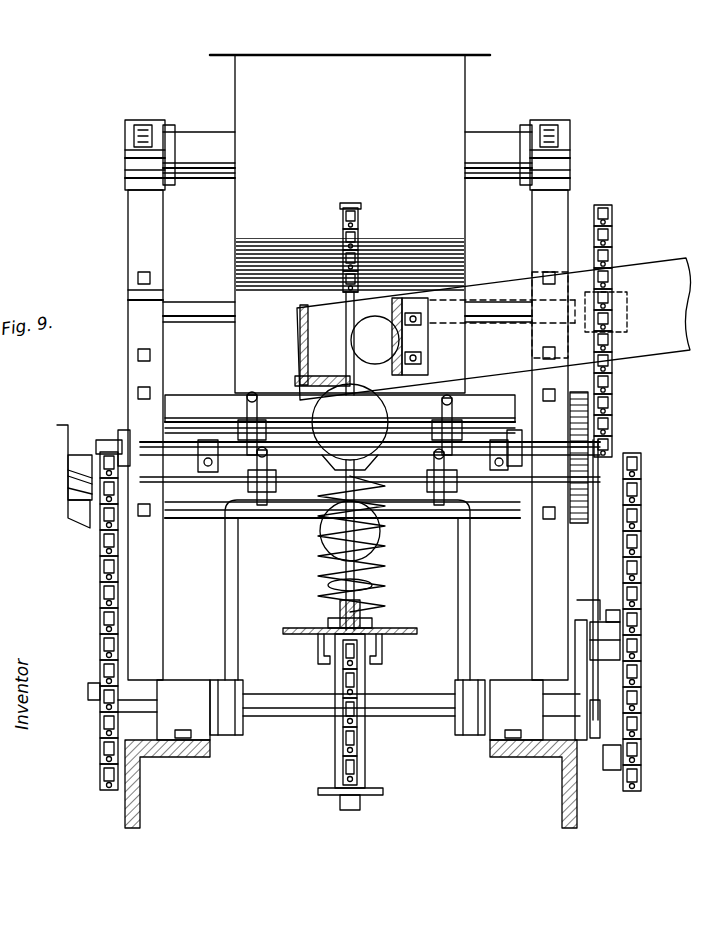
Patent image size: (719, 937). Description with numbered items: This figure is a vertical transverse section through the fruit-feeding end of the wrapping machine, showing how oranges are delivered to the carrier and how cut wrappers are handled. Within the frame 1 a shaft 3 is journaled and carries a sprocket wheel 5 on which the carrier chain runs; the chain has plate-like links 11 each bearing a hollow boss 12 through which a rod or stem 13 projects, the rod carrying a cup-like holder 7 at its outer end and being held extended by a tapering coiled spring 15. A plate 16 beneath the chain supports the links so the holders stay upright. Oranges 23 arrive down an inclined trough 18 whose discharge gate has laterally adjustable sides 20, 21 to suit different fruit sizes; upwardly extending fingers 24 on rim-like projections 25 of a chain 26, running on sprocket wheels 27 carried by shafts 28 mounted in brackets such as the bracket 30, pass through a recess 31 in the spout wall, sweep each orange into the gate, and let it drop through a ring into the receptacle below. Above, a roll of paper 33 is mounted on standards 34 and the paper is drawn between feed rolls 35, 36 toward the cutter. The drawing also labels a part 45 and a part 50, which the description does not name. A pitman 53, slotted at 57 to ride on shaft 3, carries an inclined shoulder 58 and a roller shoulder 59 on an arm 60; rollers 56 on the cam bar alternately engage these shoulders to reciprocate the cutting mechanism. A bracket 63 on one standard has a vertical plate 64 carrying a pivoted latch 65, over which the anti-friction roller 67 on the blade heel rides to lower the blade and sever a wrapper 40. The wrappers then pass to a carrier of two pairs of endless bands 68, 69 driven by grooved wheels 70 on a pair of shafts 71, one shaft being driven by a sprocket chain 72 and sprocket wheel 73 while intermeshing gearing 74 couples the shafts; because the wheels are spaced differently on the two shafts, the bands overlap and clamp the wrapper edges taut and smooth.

The frame 1 is at (195, 758).
The shaft 3 is at (428, 717).
The sprocket wheel 5 is at (335, 746).
The cup-like holder 7 is at (330, 462).
The plate-like link 11 is at (330, 625).
The boss 12 is at (362, 603).
The rod or stem 13 is at (370, 586).
The coiled spring 15 is at (362, 548).
The plate 16 is at (417, 631).
The inclined trough 18 is at (494, 329).
The gate side 20 is at (428, 340).
The gate side 21 is at (298, 338).
The orange 23 is at (313, 420).
The finger 24 is at (358, 356).
The rim-like projection 25 is at (398, 406).
The chain 26 is at (359, 212).
The sprocket wheel 27 is at (350, 262).
The shaft 28 is at (197, 306).
The bracket 30 is at (138, 293).
The recess 31 is at (344, 352).
The roll of paper 33 is at (350, 224).
The standard 34 is at (130, 230).
The roll 35 is at (183, 403).
The roll 36 is at (215, 525).
The wrapper 40 is at (386, 527).
The U-frame 45 is at (232, 598).
The guide block 50 is at (124, 432).
The pitman 53 is at (599, 558).
The roller 56 is at (646, 631).
The slot 57 is at (602, 726).
The inclined shoulder 58 is at (612, 618).
The roller shoulder 59 is at (621, 648).
The arm 60 is at (588, 685).
The bracket 63 is at (74, 530).
The plate 64 is at (66, 445).
The latch 65 is at (72, 471).
The anti-friction roller 67 is at (62, 489).
The endless band 68 is at (243, 430).
The endless band 69 is at (458, 432).
The grooved wheel 70 is at (258, 422).
The shaft 71 is at (203, 438).
The sprocket chain 72 is at (100, 586).
The sprocket wheel 73 is at (105, 440).
The intermeshing gearing 74 is at (606, 414).